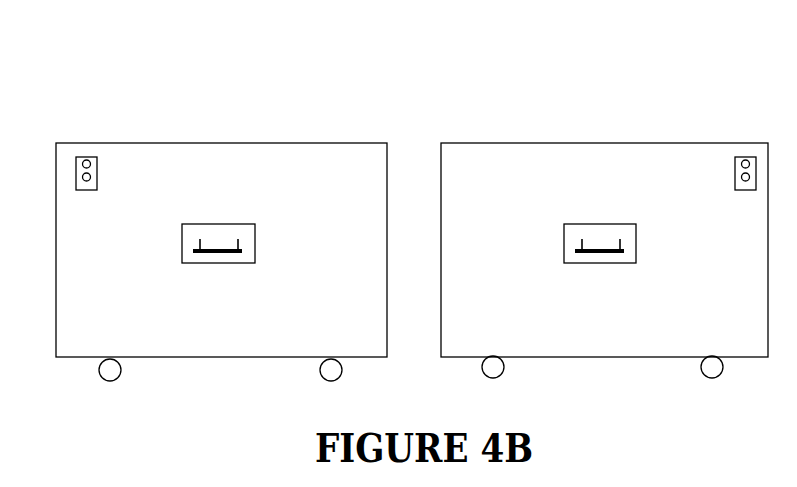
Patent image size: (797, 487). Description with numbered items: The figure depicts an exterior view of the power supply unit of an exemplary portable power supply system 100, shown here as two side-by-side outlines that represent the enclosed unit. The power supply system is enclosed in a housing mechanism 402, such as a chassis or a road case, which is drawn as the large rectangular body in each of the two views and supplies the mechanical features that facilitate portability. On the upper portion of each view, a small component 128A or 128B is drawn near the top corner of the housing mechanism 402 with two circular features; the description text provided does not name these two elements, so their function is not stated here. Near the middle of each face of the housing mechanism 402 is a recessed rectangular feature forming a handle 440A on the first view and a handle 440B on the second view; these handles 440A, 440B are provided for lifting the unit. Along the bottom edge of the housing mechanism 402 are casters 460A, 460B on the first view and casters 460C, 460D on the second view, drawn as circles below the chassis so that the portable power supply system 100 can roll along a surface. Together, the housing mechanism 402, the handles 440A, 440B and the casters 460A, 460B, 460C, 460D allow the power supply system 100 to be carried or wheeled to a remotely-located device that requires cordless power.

The portable power supply system 100 is at (221, 100).
The housing mechanism 402 is at (289, 143).
The sensor unit 128A is at (97, 182).
The sensor unit 128B is at (735, 181).
The handle 440A is at (247, 224).
The handle 440B is at (630, 224).
The caster 460A is at (99, 369).
The caster 460B is at (320, 369).
The caster 460C is at (482, 366).
The caster 460D is at (701, 366).